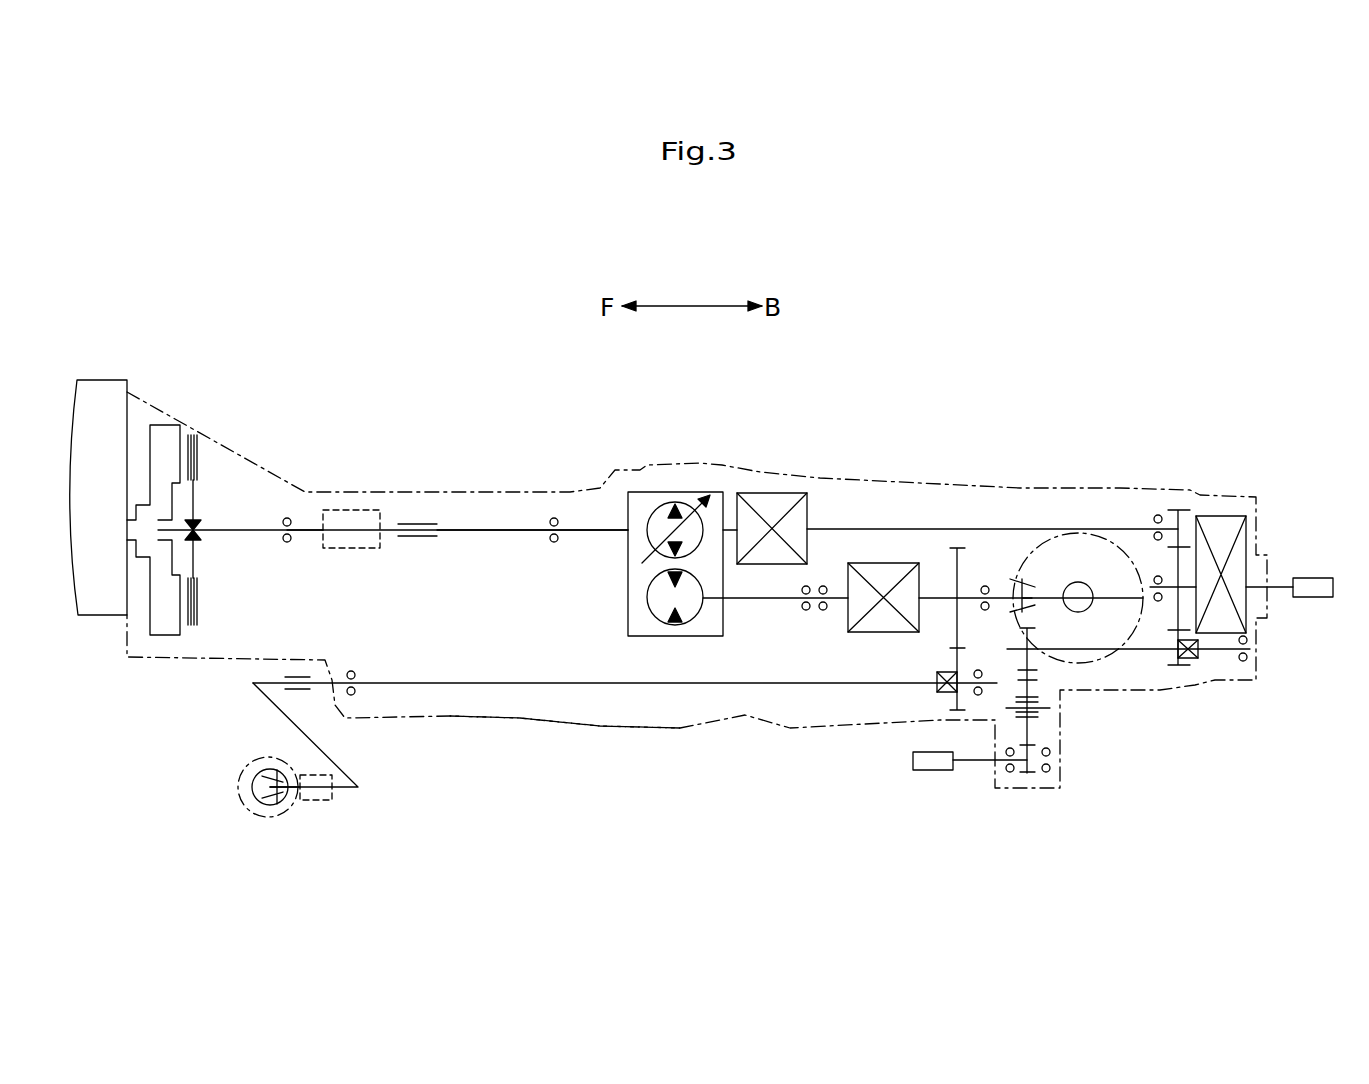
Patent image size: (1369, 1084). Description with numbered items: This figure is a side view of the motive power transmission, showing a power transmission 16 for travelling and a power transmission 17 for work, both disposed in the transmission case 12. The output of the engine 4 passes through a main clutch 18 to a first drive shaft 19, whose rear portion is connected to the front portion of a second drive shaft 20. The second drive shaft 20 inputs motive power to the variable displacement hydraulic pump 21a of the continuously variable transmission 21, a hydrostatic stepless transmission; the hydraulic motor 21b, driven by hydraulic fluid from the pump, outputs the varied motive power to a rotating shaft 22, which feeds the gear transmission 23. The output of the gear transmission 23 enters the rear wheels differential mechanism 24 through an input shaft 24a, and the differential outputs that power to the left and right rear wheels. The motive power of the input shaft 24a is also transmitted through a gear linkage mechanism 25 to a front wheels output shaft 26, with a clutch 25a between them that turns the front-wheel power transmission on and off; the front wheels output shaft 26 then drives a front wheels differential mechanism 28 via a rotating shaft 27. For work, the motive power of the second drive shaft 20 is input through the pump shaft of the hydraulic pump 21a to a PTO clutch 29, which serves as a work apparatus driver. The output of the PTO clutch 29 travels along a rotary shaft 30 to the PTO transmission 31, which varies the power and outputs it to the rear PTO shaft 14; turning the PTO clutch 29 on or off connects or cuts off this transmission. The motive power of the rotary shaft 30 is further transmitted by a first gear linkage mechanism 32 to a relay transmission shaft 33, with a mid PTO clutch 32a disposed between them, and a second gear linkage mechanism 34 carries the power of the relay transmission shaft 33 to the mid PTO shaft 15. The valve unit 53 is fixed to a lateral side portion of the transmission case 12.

The engine 4 is at (100, 380).
The transmission case 12 is at (585, 488).
The rear PTO shaft 14 is at (1313, 600).
The mid PTO shaft 15 is at (930, 772).
The power transmission for travelling 16 is at (506, 516).
The power transmission for work 17 is at (666, 698).
The main clutch 18 is at (193, 430).
The first drive shaft 19 is at (303, 525).
The second drive shaft 20 is at (470, 532).
The continuously variable transmission 21 is at (642, 519).
The variable displacement hydraulic pump 21a is at (648, 542).
The hydraulic motor 21b is at (648, 608).
The rotating shaft 22 is at (762, 600).
The gear transmission 23 is at (848, 620).
The rear wheels differential mechanism 24 is at (1133, 552).
The input shaft 24a is at (1003, 590).
The gear linkage mechanism 25 is at (953, 650).
The clutch 25a is at (937, 688).
The front wheels output shaft 26 is at (460, 716).
The rotating shaft 27 is at (280, 705).
The front wheels differential mechanism 28 is at (268, 817).
The PTO clutch 29 is at (775, 493).
The rotary shaft 30 is at (928, 527).
The PTO transmission 31 is at (1248, 534).
The first gear linkage mechanism 32 is at (1177, 509).
The mid PTO clutch 32a is at (1192, 658).
The relay transmission shaft 33 is at (1128, 655).
The second gear linkage mechanism 34 is at (1038, 729).
The valve unit 53 is at (349, 550).